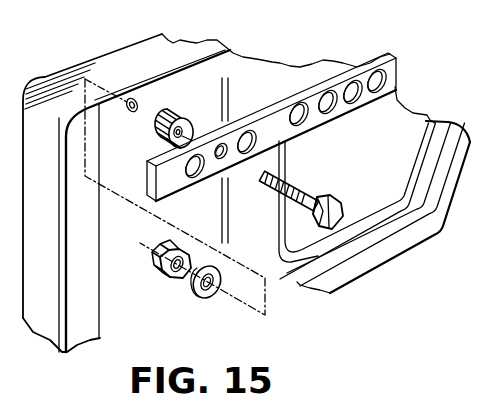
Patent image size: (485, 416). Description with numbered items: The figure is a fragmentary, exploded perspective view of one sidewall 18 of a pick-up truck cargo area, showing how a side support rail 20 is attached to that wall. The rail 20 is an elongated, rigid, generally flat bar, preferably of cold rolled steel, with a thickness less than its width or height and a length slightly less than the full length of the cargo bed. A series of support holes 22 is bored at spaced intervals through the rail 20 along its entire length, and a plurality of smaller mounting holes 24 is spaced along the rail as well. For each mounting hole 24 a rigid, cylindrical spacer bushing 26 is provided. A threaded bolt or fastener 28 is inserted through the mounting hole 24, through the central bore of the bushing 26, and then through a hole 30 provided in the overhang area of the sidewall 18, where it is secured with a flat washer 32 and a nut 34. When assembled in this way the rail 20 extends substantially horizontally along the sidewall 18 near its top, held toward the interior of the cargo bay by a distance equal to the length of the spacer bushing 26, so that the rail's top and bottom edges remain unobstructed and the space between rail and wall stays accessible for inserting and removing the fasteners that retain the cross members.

The sidewall 18 is at (116, 60).
The side support rail 20 is at (295, 142).
The support holes 22 is at (195, 178).
The mounting holes 24 is at (226, 158).
The spacer bushing 26 is at (173, 112).
The threaded bolt 28 is at (341, 203).
The hole 30 is at (138, 108).
The flat washer 32 is at (193, 286).
The nut 34 is at (163, 272).